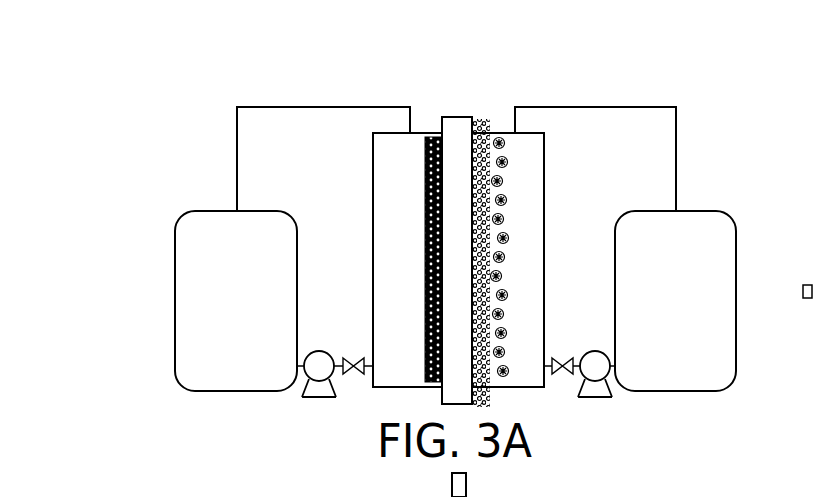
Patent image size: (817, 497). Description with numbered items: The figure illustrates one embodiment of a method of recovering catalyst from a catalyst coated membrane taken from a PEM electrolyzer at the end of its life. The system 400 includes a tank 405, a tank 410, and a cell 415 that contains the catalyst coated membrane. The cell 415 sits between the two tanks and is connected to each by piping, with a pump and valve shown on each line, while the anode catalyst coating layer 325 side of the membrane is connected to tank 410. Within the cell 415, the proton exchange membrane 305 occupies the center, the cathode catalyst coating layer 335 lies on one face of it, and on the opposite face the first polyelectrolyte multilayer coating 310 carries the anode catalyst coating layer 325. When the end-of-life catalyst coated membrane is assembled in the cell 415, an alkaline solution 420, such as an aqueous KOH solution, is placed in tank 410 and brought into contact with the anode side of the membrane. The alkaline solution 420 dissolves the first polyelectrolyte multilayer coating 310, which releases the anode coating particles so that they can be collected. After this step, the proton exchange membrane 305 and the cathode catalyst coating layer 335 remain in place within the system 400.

The system 400 is at (196, 106).
The tank 405 is at (208, 211).
The tank 410 is at (715, 211).
The cell 415 is at (544, 165).
The alkaline solution 420 is at (717, 341).
The proton exchange membrane 305 is at (458, 117).
The first polyelectrolyte multilayer coating 310 is at (483, 118).
The anode catalyst coating layer 325 is at (500, 148).
The cathode catalyst coating layer 335 is at (425, 137).